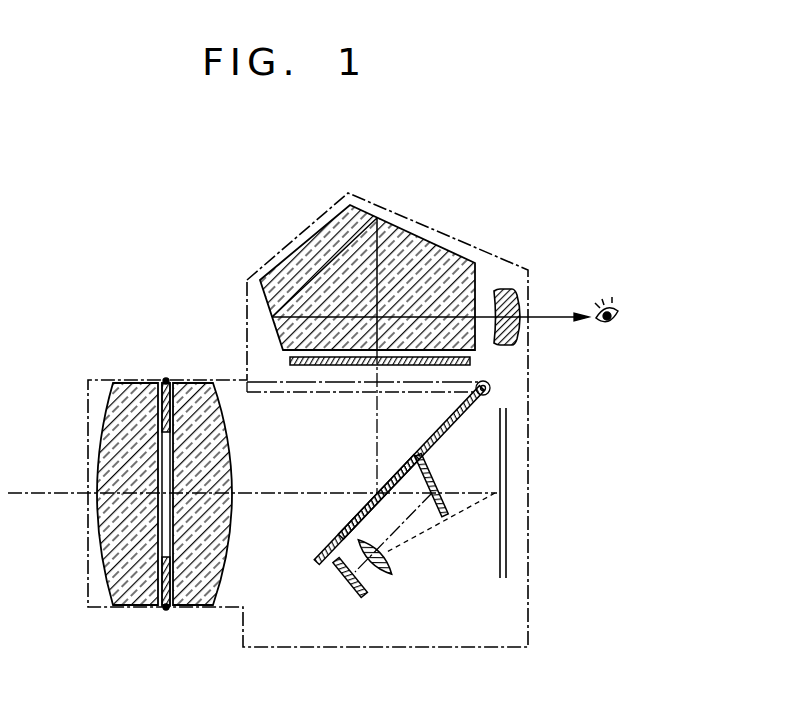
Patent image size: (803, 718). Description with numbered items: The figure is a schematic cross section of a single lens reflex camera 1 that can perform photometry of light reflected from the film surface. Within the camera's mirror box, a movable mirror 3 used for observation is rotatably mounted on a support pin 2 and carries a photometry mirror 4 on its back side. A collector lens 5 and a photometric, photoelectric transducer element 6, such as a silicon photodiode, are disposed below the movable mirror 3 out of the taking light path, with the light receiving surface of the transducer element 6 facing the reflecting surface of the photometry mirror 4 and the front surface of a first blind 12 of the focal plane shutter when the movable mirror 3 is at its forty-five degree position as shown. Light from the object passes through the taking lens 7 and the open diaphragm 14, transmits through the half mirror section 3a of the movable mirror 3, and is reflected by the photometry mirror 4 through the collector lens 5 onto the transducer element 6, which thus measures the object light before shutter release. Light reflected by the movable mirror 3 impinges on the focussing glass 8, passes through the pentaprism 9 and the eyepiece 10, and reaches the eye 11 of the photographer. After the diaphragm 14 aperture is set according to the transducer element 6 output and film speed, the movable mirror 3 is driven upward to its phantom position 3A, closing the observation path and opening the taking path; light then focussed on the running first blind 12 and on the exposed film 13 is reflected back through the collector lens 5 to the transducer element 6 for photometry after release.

The camera 1 is at (440, 232).
The support pin 2 is at (486, 383).
The movable mirror 3 is at (447, 419).
The upward position of movable mirror 3A is at (295, 387).
The half mirror section 3a is at (408, 467).
The photometry mirror 4 is at (435, 481).
The collector lens 5 is at (392, 567).
The photoelectric transducer element 6 is at (363, 596).
The taking lens 7 is at (218, 432).
The focussing glass 8 is at (300, 369).
The pentaprism 9 is at (305, 253).
The eyepiece 10 is at (518, 310).
The eye 11 is at (613, 303).
The first blind 12 is at (500, 541).
The film 13 is at (503, 578).
The diaphragm 14 is at (166, 379).